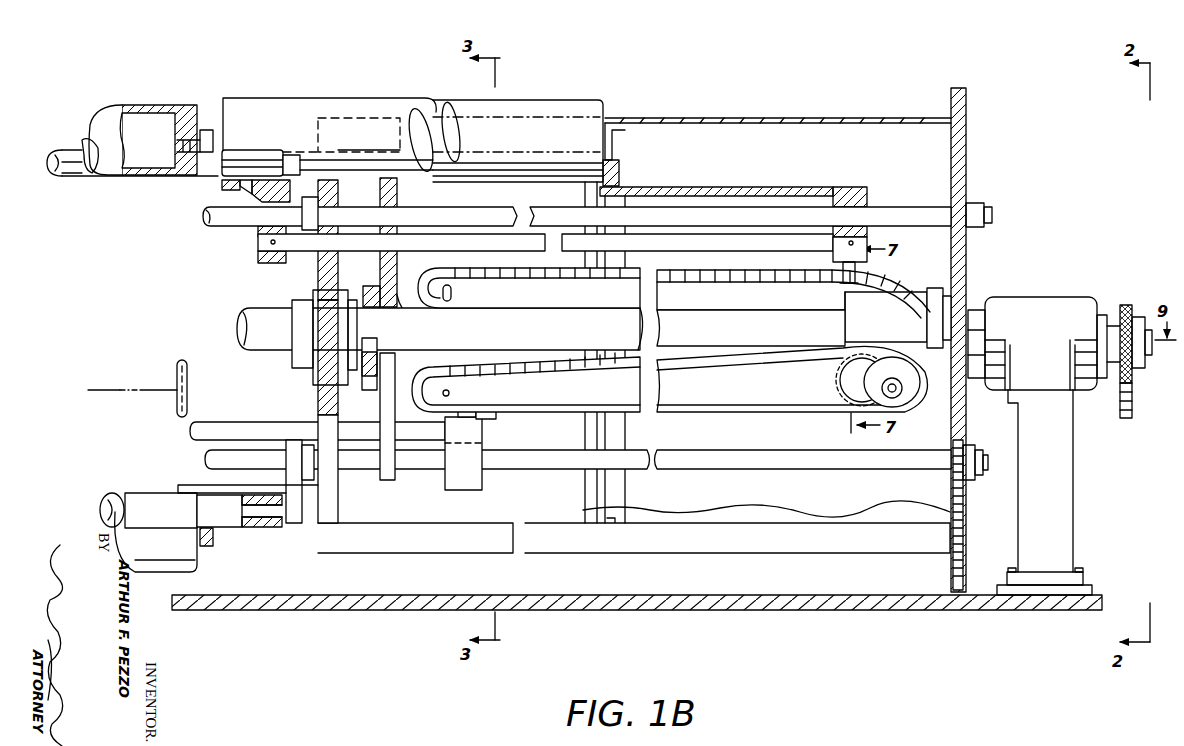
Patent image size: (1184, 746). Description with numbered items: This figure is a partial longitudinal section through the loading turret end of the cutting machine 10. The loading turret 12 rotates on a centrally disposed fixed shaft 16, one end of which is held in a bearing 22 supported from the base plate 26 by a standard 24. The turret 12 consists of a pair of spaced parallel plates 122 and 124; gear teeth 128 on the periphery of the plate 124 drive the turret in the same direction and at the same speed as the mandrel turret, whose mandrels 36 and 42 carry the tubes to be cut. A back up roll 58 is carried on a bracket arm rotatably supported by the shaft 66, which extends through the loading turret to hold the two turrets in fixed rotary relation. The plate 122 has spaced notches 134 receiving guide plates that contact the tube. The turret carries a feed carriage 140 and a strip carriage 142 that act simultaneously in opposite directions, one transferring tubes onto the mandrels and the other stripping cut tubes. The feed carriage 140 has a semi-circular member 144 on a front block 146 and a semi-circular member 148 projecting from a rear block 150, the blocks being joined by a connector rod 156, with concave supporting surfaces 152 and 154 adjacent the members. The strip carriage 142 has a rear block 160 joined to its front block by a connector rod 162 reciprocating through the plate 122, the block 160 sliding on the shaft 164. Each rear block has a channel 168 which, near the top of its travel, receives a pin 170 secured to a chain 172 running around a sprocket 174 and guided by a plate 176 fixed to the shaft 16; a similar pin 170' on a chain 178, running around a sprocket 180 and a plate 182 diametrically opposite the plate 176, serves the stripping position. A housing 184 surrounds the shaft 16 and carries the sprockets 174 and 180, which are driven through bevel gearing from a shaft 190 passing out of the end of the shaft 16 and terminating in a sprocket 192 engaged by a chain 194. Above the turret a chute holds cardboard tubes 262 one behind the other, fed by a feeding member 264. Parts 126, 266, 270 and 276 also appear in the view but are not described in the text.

The cutting machine 10 is at (710, 616).
The loading turret 12 is at (762, 112).
The central shaft 16 is at (270, 308).
The bearing 22 is at (1058, 300).
The standard 24 is at (1066, 497).
The base plate 26 is at (805, 607).
The mandrel 36 is at (112, 106).
The mandrel 42 is at (185, 560).
The back up roll 58 is at (70, 172).
The shaft 66 is at (203, 211).
The plate 122 is at (318, 400).
The plate 124 is at (967, 157).
The top bar 126 is at (852, 117).
The gear teeth 128 is at (963, 575).
The notch 134 is at (338, 183).
The feed carriage 140 is at (791, 186).
The strip carriage 142 is at (392, 497).
The semi-circular member 144 is at (223, 152).
The front block 146 is at (284, 264).
The semi-circular member 148 is at (619, 176).
The rear block 150 is at (850, 196).
The concave supporting surface 152 is at (222, 187).
The concave supporting surface 154 is at (613, 150).
The connector rod 156 is at (258, 240).
The rear block 160 is at (482, 478).
The connector rod 162 is at (228, 428).
The shaft 164 is at (716, 450).
The channel 168 is at (834, 250).
The pin 170 is at (827, 282).
The pin 170' is at (500, 419).
The chain 172 is at (780, 281).
The sprocket 174 is at (890, 284).
The plate 176 is at (529, 288).
The chain 178 is at (751, 328).
The sprocket 180 is at (845, 369).
The plate 182 is at (670, 379).
The housing 184 is at (898, 318).
The shaft 190 is at (1124, 308).
The sprocket 192 is at (1120, 376).
The chain 194 is at (1124, 418).
The cardboard tubes 262 is at (308, 100).
The feeding member 264 is at (363, 292).
The hook 266 is at (410, 315).
The flange 270 is at (295, 508).
The motor 276 is at (160, 493).